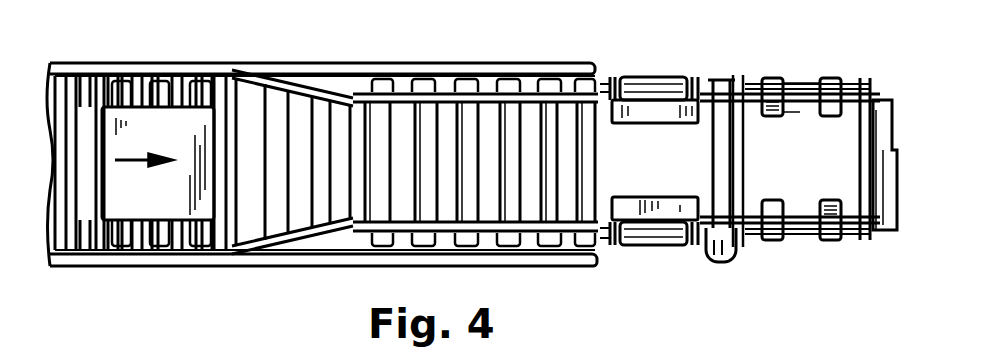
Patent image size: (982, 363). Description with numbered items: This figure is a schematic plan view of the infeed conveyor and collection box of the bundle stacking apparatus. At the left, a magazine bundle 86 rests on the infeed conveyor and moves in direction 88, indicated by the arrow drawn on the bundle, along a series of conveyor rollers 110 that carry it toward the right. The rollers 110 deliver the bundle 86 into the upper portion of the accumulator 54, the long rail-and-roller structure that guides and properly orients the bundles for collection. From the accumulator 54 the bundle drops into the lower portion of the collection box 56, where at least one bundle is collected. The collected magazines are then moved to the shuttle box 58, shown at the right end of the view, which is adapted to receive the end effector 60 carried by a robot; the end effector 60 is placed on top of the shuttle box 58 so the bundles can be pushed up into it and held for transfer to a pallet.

The accumulator 54 is at (488, 74).
The collection box 56 is at (690, 76).
The shuttle box 58 is at (804, 80).
The end effector 60 is at (802, 207).
The magazine bundle 86 is at (118, 88).
The direction 88 is at (158, 150).
The conveyor rollers 110 is at (130, 258).